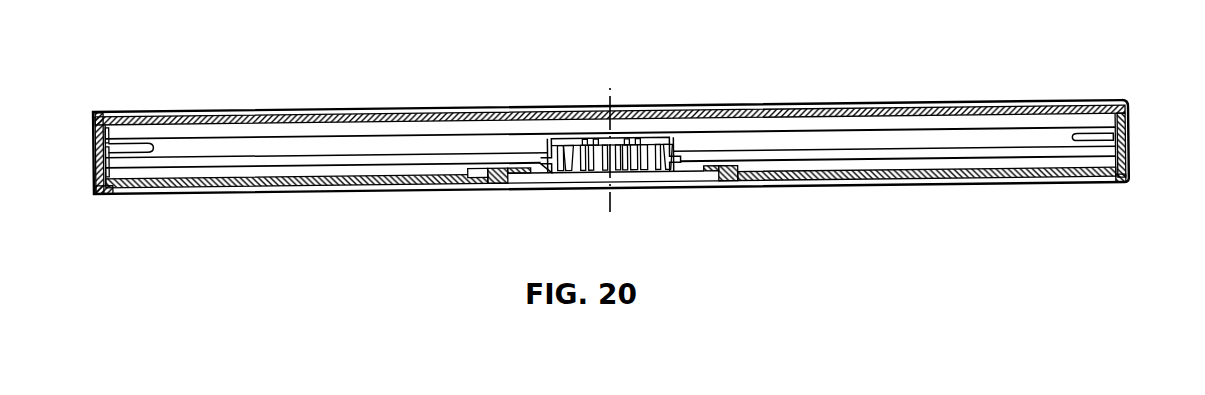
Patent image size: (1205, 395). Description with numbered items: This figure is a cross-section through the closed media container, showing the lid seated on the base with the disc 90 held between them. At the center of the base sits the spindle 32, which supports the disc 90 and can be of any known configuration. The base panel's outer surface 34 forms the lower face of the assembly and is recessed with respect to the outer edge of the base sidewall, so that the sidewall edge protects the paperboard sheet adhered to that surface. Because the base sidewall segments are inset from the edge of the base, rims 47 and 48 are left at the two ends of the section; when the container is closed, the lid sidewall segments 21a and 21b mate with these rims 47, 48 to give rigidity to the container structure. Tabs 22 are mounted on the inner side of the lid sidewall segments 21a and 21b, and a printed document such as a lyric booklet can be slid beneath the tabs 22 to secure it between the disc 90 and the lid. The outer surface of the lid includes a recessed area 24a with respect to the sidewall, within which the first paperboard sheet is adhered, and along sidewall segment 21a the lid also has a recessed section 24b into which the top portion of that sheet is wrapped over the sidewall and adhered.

The tab 22 is at (153, 148).
The lid sidewall segment 21a is at (1133, 163).
The lid sidewall segment 21b is at (93, 152).
The recessed area 24a is at (975, 100).
The recessed section 24b is at (1130, 117).
The spindle 32 is at (681, 139).
The outer surface 34 is at (581, 189).
The rim 47 is at (95, 196).
The rim 48 is at (1130, 187).
The disc 90 is at (473, 166).